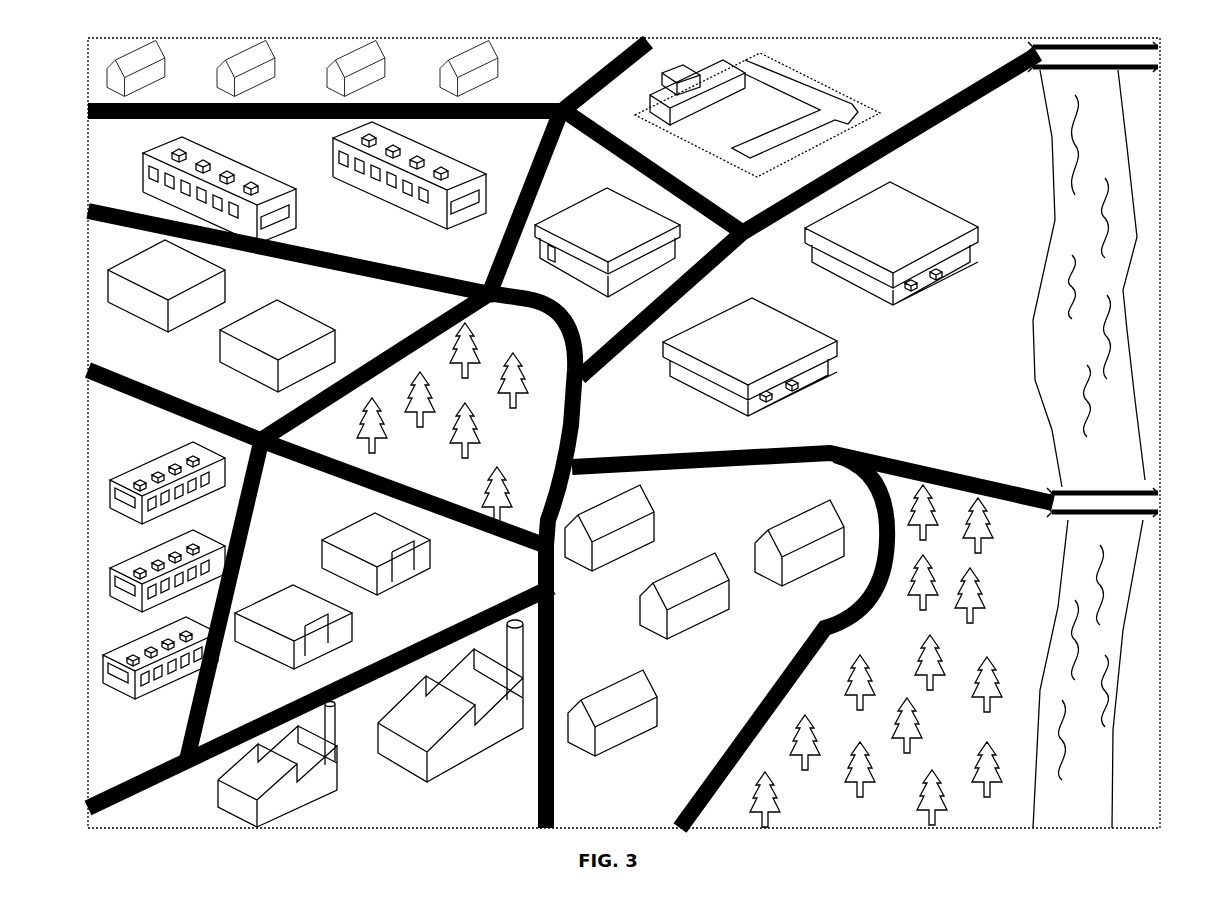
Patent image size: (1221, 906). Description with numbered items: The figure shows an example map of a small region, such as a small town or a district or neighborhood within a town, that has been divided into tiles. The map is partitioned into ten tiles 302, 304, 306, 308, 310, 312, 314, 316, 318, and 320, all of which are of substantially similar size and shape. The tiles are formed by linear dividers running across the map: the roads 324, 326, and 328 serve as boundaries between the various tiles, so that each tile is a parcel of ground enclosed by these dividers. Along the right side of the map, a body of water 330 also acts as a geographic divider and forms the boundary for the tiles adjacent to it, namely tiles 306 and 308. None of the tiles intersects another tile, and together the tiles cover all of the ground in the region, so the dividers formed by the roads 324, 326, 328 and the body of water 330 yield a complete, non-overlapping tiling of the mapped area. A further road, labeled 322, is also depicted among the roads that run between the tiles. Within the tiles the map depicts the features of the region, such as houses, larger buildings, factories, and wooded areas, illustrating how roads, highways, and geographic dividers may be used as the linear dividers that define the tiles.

The tile 302 is at (283, 521).
The tile 304 is at (406, 476).
The tile 306 is at (923, 380).
The tile 308 is at (1013, 580).
The tile 310 is at (693, 506).
The tile 312 is at (568, 176).
The tile 314 is at (883, 76).
The tile 316 is at (256, 150).
The tile 318 is at (263, 295).
The tile 320 is at (116, 448).
The road 322 is at (548, 830).
The road 324 is at (682, 830).
The road 326 is at (90, 371).
The road 328 is at (90, 213).
The body of water 330 is at (1122, 137).